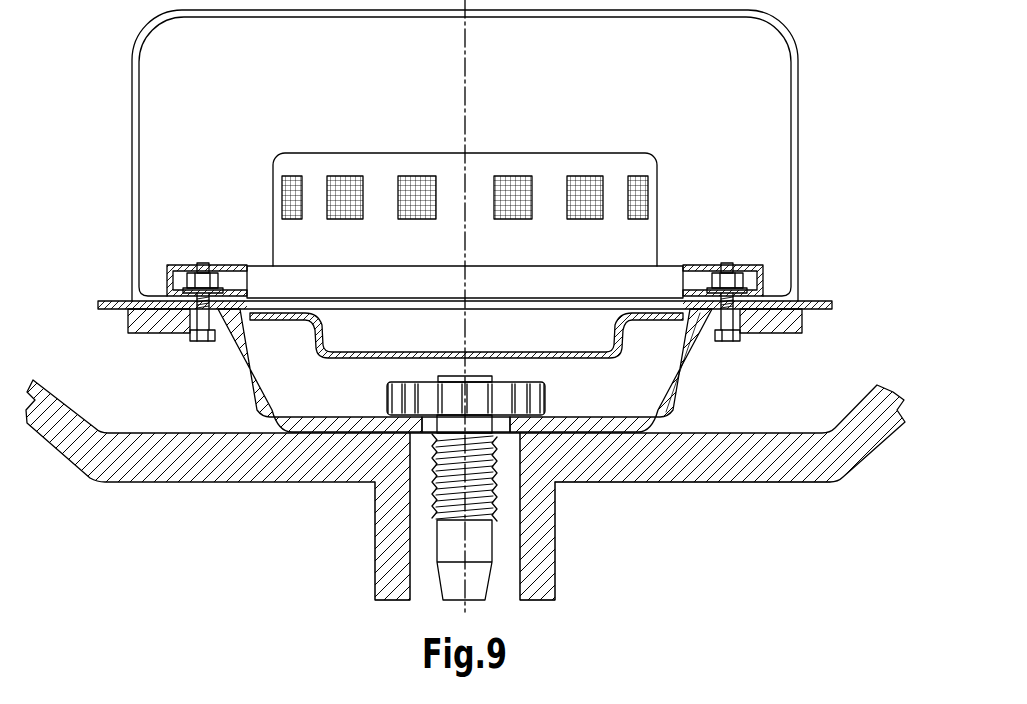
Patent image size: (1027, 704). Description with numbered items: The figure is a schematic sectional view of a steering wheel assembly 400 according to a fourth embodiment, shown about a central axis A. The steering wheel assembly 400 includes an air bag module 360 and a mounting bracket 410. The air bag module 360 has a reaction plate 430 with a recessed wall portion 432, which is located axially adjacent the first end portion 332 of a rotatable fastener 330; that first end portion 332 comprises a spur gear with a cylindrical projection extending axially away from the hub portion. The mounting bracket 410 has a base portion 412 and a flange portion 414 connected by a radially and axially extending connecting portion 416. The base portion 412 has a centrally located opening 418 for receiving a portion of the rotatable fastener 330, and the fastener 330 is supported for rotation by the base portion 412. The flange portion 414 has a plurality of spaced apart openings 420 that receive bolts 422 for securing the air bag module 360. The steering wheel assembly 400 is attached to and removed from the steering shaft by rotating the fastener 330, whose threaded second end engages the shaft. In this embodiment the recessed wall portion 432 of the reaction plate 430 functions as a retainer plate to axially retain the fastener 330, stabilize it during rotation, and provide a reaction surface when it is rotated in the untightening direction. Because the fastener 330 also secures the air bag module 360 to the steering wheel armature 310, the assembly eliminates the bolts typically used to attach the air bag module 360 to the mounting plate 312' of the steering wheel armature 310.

The steering wheel assembly 400 is at (844, 105).
The air bag module 360 is at (808, 198).
The reaction plate 430 is at (822, 302).
The flange portion 414 is at (792, 325).
The connecting portion 416 is at (687, 363).
The mounting bracket 410 is at (694, 400).
The recessed wall portion 432 is at (255, 388).
The openings 420 is at (185, 331).
The bolts 422 is at (187, 341).
The opening 418 is at (430, 428).
The rotatable fastener 330 is at (428, 549).
The first end portion 332 is at (547, 400).
The base portion 412 is at (622, 422).
The mounting plate 312' is at (692, 525).
The steering wheel armature 310 is at (856, 488).
The axis A is at (465, 612).